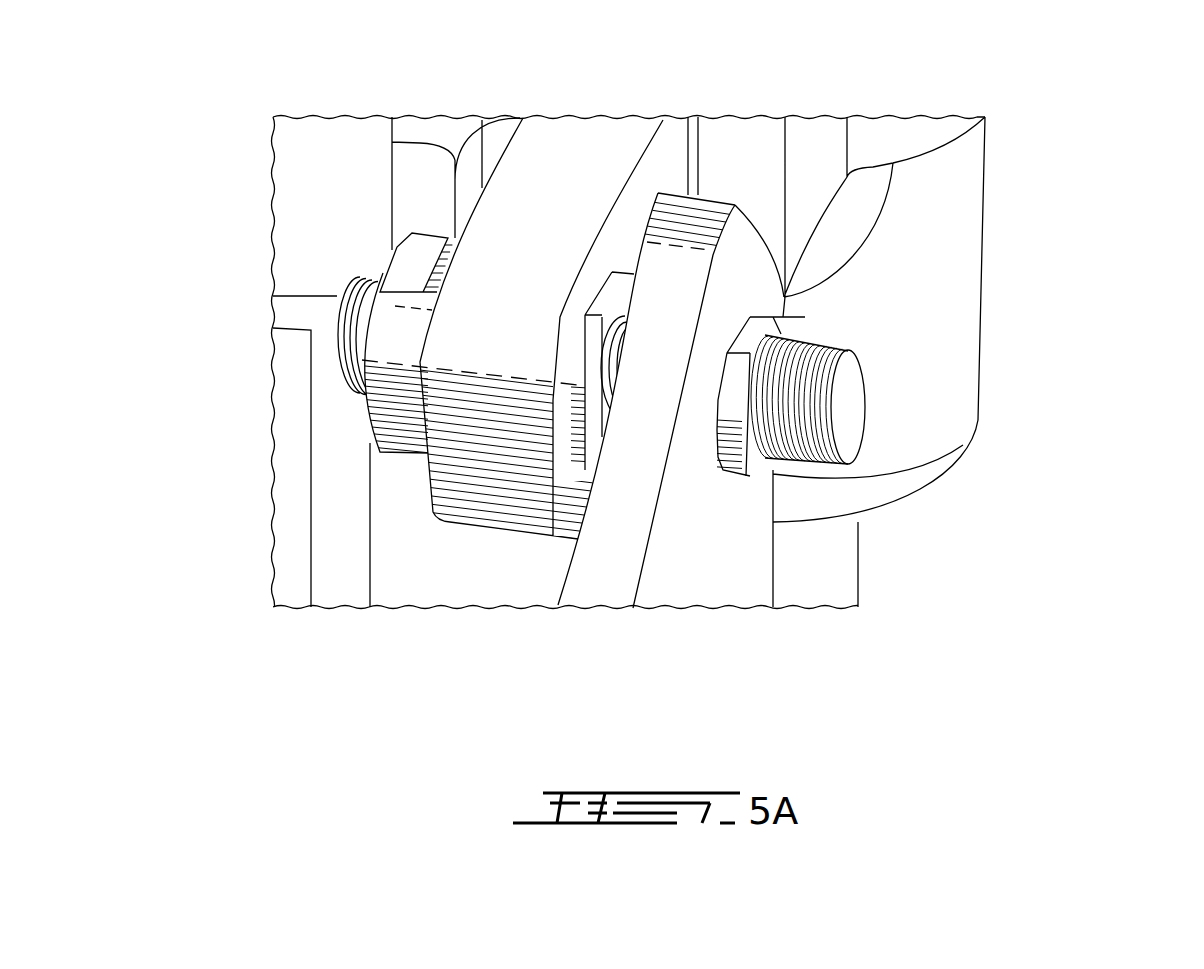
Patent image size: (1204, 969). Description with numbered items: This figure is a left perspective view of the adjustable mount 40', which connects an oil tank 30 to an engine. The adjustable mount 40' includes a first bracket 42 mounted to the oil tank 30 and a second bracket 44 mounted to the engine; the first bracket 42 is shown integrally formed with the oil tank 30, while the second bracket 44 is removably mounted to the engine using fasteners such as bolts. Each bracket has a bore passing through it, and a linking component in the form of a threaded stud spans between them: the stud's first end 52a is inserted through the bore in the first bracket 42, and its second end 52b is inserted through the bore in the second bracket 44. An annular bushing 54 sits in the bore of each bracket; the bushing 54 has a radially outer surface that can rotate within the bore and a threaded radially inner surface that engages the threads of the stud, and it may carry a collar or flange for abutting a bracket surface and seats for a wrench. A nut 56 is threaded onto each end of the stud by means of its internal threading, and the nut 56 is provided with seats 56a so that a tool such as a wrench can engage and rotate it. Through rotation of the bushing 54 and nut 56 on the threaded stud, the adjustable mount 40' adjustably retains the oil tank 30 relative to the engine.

The oil tank 30 is at (285, 184).
The adjustable mount 40' is at (937, 319).
The first bracket 42 is at (548, 165).
The second bracket 44 is at (712, 570).
The first end 52a is at (355, 325).
The second end 52b is at (847, 415).
The bushing 54 is at (592, 460).
The nut 56 is at (393, 422).
The seat 56a is at (413, 265).